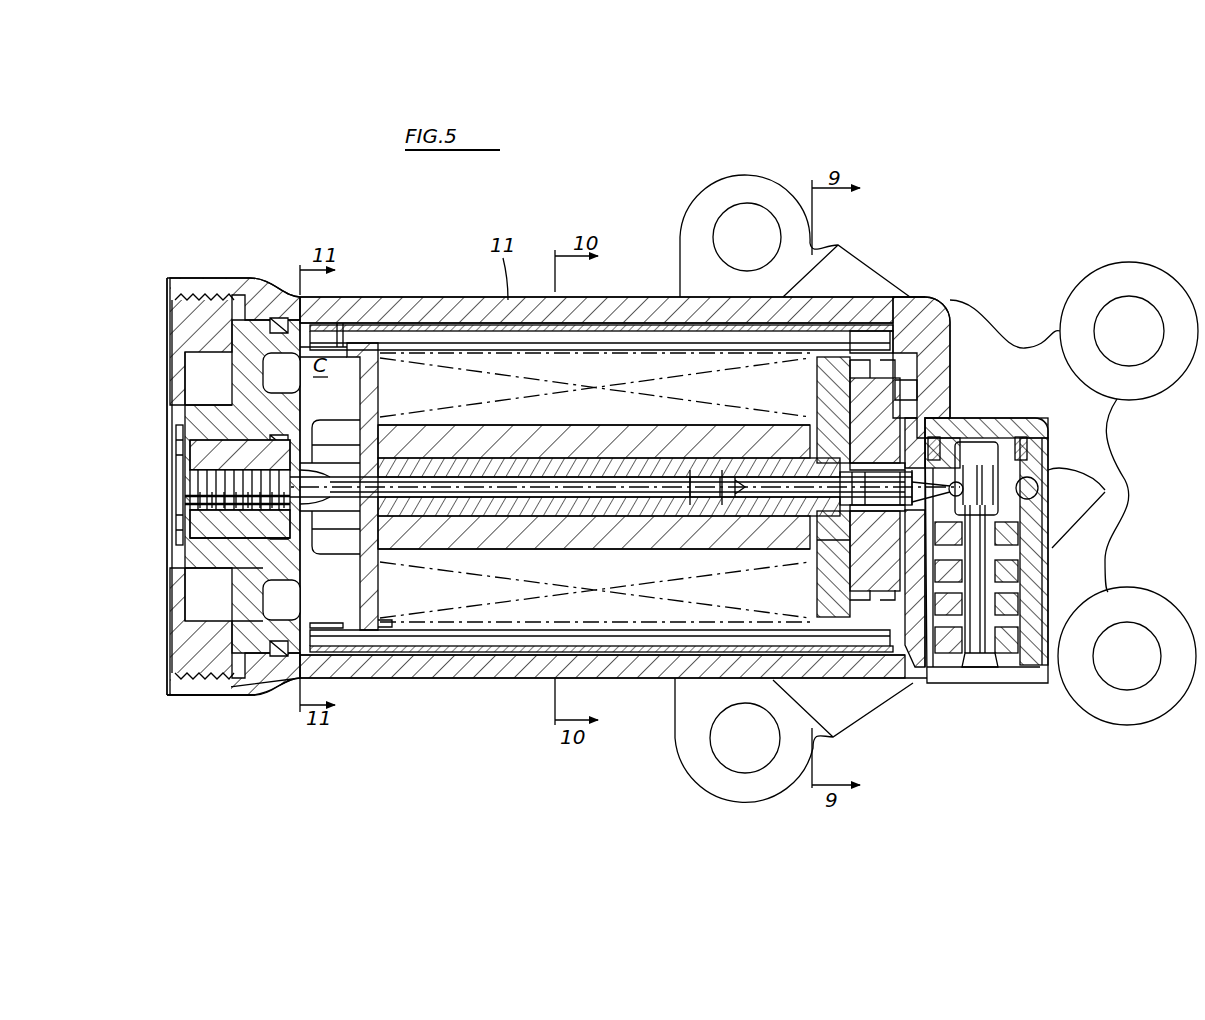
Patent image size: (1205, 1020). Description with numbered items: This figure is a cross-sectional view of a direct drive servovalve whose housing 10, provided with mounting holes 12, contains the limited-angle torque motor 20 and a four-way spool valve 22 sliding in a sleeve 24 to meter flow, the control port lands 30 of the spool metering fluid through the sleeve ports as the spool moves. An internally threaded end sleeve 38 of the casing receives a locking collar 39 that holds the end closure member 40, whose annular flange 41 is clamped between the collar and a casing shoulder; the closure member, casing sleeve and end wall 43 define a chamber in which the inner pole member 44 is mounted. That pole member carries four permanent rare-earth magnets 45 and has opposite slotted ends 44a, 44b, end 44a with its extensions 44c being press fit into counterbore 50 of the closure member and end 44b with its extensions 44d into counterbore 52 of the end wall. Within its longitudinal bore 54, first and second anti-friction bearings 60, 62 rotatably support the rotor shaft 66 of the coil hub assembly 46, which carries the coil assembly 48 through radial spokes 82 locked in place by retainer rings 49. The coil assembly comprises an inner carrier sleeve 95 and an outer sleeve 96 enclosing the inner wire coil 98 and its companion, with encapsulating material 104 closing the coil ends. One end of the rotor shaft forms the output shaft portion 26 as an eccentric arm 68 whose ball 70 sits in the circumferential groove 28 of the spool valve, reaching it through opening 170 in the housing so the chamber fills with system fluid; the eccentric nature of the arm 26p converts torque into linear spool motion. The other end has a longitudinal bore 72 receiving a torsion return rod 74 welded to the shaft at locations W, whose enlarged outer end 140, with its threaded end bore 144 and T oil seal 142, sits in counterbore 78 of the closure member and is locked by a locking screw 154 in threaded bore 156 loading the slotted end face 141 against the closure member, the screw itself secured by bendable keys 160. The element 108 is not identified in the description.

The housing 10 is at (258, 292).
The mounting holes 12 is at (746, 210).
The torque motor 20 is at (493, 663).
The spool valve 22 is at (978, 660).
The sleeve 24 is at (1030, 440).
The output shaft portion 26 is at (1005, 552).
The eccentric arm 26p is at (825, 545).
The circumferential groove 28 is at (1040, 482).
The control port lands 30 is at (450, 300).
The end sleeve 38 is at (195, 290).
The locking collar 39 is at (170, 322).
The end closure member 40 is at (243, 370).
The annular flange 41 is at (180, 640).
The end wall 43 is at (895, 665).
The inner pole member 44 is at (516, 550).
The slotted end 44a is at (353, 562).
The slotted end 44b is at (952, 300).
The extensions 44c is at (290, 545).
The extensions 44d is at (848, 418).
The permanent rare-earth magnets 45 is at (612, 372).
The coil hub assembly 46 is at (388, 382).
The coil assembly 48 is at (634, 300).
The retainer rings 49 is at (912, 338).
The counterbore 50 is at (352, 425).
The counterbore 52 is at (936, 357).
The longitudinal cylindrical bore 54 is at (587, 458).
The first anti-friction bearing 60 is at (520, 458).
The second anti-friction bearing 62 is at (740, 551).
The rotor shaft 66 is at (562, 516).
The eccentric arm 68 is at (937, 480).
The ball 70 is at (982, 468).
The longitudinal bore 72 is at (421, 500).
The torsion return rod 74 is at (473, 497).
The counterbore 78 is at (230, 402).
The spokes 82 is at (378, 345).
The inner carrier sleeve 95 is at (772, 342).
The outer sleeve 96 is at (852, 300).
The inner wire coil 98 is at (392, 335).
The encapsulating material 104 is at (315, 304).
The sleeve 108 is at (506, 338).
The outer end 140 is at (258, 515).
The slotted end face 141 is at (250, 505).
The T oil seal 142 is at (255, 543).
The threaded end bore 144 is at (195, 465).
The locking screw 154 is at (190, 488).
The threaded bore 156 is at (215, 475).
The bendable keys 160 is at (177, 422).
The opening 170 is at (954, 422).
The welding locations W is at (722, 478).